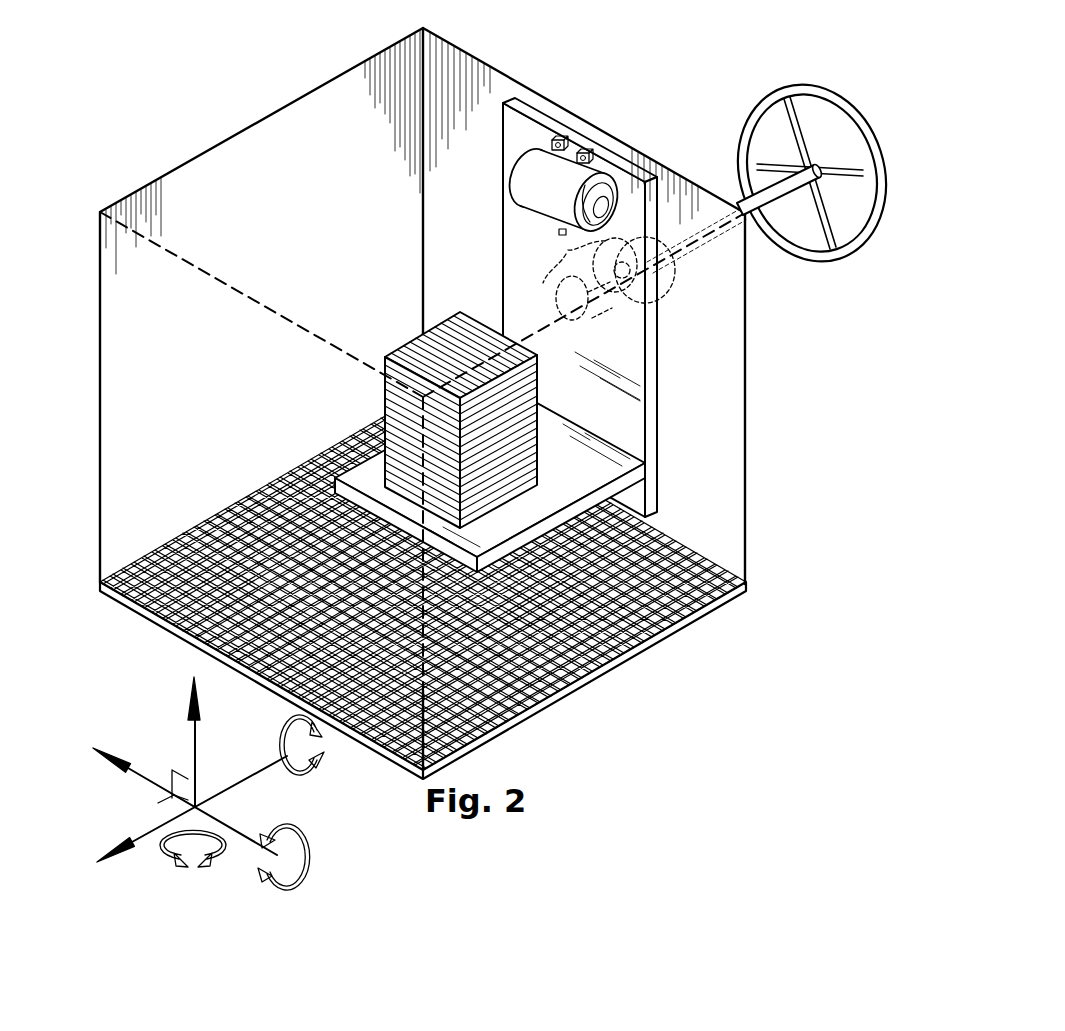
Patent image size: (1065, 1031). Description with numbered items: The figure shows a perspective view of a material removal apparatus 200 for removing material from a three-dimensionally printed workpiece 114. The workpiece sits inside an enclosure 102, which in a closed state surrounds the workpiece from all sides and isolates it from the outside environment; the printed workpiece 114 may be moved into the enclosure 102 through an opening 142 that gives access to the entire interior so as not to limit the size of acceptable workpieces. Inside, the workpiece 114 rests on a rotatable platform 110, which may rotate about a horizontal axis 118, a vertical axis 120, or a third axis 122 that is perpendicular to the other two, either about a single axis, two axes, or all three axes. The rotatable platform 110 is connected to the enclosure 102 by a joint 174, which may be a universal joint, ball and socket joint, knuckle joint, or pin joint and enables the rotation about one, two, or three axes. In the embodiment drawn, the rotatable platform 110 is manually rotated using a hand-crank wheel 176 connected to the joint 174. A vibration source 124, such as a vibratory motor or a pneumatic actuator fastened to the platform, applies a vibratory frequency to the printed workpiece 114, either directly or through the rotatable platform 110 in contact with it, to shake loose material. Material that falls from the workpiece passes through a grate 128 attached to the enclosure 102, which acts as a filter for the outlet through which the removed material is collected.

The material removal apparatus 200 is at (195, 92).
The enclosure 102 is at (340, 77).
The rotatable platform 110 is at (652, 385).
The 3D printed workpiece 114 is at (386, 356).
The horizontal axis 118 is at (137, 837).
The vertical axis 120 is at (195, 747).
The third axis 122 is at (145, 778).
The vibration source 124 is at (545, 172).
The grate 128 is at (173, 567).
The opening 142 is at (125, 300).
The joint 174 is at (568, 250).
The hand-crank wheel 176 is at (810, 88).